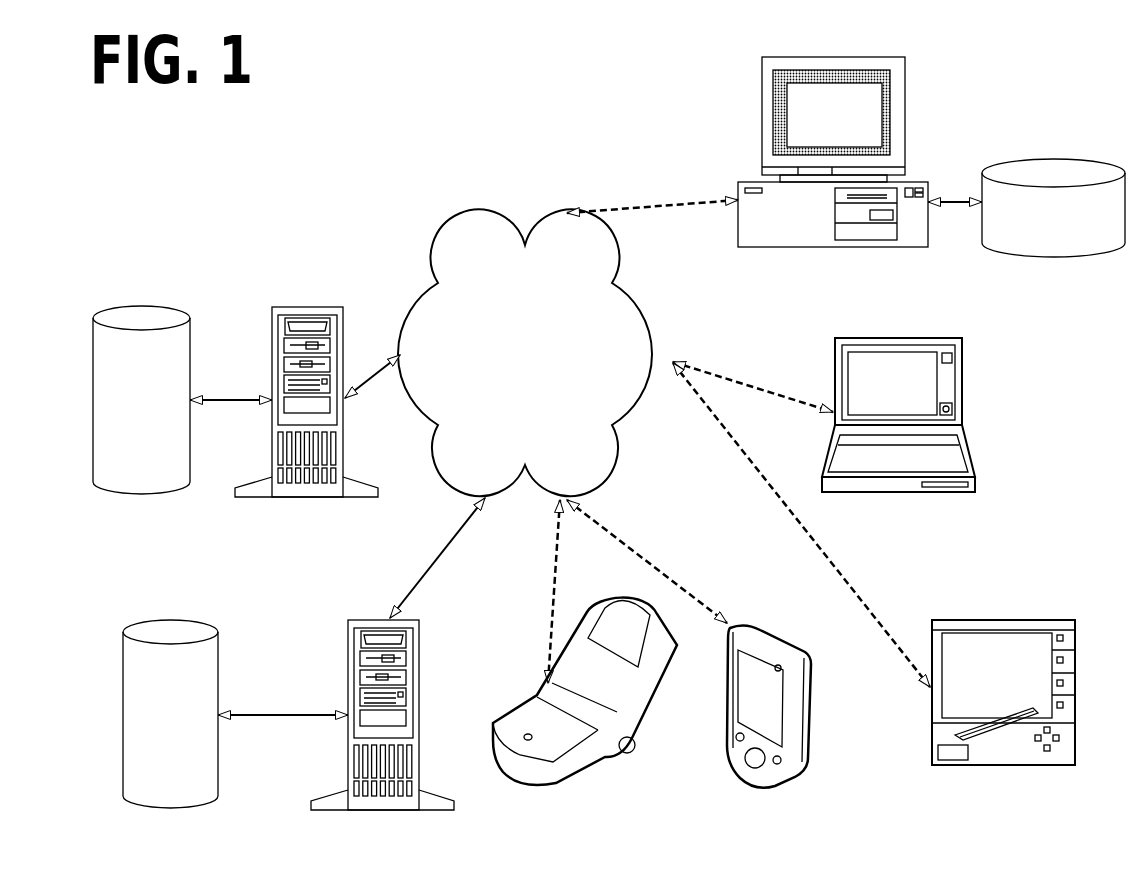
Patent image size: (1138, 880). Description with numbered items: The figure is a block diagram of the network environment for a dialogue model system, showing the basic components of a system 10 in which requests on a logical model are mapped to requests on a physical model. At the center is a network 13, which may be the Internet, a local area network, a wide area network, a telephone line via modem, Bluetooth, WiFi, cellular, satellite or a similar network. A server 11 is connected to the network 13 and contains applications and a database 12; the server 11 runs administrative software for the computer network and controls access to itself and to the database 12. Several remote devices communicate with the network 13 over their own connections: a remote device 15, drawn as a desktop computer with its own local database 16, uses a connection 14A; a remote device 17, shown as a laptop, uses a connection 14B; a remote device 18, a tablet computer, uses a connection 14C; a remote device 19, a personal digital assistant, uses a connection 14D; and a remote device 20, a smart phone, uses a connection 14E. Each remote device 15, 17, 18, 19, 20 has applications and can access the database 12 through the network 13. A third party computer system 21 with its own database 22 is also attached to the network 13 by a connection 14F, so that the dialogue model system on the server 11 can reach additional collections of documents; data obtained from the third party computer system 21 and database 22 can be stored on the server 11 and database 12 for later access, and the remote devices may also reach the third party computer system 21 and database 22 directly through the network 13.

The system 10 is at (470, 156).
The server 11 is at (307, 305).
The database 12 is at (142, 306).
The network 13 is at (487, 212).
The connection 14A is at (678, 203).
The connection 14B is at (715, 373).
The connection 14C is at (825, 560).
The connection 14D is at (643, 562).
The connection 14E is at (552, 603).
The connection 14F is at (423, 573).
The remote device 15 is at (832, 57).
The local database 16 is at (1055, 153).
The remote device 17 is at (962, 415).
The remote device 18 is at (1003, 620).
The remote device 19 is at (808, 765).
The remote device 20 is at (627, 748).
The third party computer system 21 is at (360, 622).
The database 22 is at (172, 620).